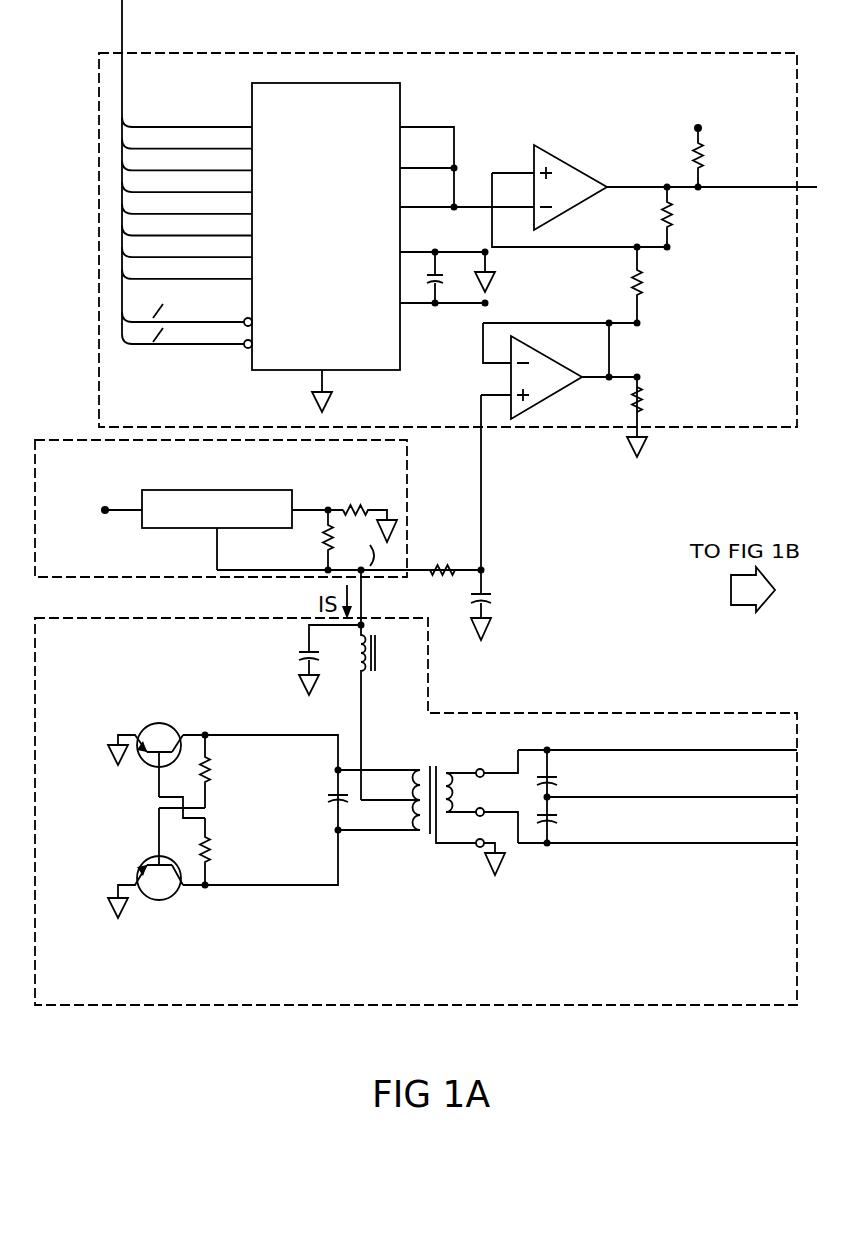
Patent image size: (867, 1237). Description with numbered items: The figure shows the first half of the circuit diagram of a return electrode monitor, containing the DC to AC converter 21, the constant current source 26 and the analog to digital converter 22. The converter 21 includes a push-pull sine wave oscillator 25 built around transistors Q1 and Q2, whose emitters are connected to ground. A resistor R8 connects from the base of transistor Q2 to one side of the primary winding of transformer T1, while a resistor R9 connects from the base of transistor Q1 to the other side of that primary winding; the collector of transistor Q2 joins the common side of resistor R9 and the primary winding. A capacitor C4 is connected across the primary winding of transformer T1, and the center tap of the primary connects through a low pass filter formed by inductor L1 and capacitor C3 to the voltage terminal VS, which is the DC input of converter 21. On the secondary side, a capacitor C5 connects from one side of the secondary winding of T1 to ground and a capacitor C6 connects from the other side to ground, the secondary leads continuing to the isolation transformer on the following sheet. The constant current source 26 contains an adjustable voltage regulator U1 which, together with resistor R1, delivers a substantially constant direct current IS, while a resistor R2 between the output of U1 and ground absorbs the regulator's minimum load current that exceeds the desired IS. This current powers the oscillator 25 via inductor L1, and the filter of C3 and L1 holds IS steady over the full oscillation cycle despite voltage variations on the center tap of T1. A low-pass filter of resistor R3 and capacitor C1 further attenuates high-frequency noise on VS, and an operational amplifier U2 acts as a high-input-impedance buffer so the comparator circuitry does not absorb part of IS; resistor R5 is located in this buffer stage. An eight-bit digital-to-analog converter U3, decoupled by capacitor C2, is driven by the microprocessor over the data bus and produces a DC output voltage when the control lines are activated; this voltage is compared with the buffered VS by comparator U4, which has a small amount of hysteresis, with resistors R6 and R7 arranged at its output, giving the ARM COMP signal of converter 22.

The DC to AC converter 21 is at (527, 1006).
The analog to digital converter 22 is at (543, 430).
The push-pull sine wave oscillator 25 is at (308, 890).
The constant current source 26 is at (151, 578).
The adjustable voltage regulator U1 is at (192, 490).
The operational amplifier U2 is at (540, 360).
The digital-to-analog converter U3 is at (287, 247).
The comparator U4 is at (561, 158).
The resistor R1 is at (306, 540).
The resistor R2 is at (368, 510).
The resistor R3 is at (445, 558).
The resistor R5 is at (655, 285).
The resistor R6 is at (686, 217).
The resistor R7 is at (715, 157).
The resistor R8 is at (221, 771).
The resistor R9 is at (221, 851).
The capacitor C1 is at (498, 604).
The capacitor C2 is at (449, 277).
The capacitor C3 is at (311, 660).
The capacitor C4 is at (321, 800).
The capacitor C5 is at (565, 784).
The capacitor C6 is at (565, 824).
The transistor Q1 is at (145, 750).
The transistor Q2 is at (155, 866).
The inductor L1 is at (388, 712).
The transformer T1 is at (428, 804).